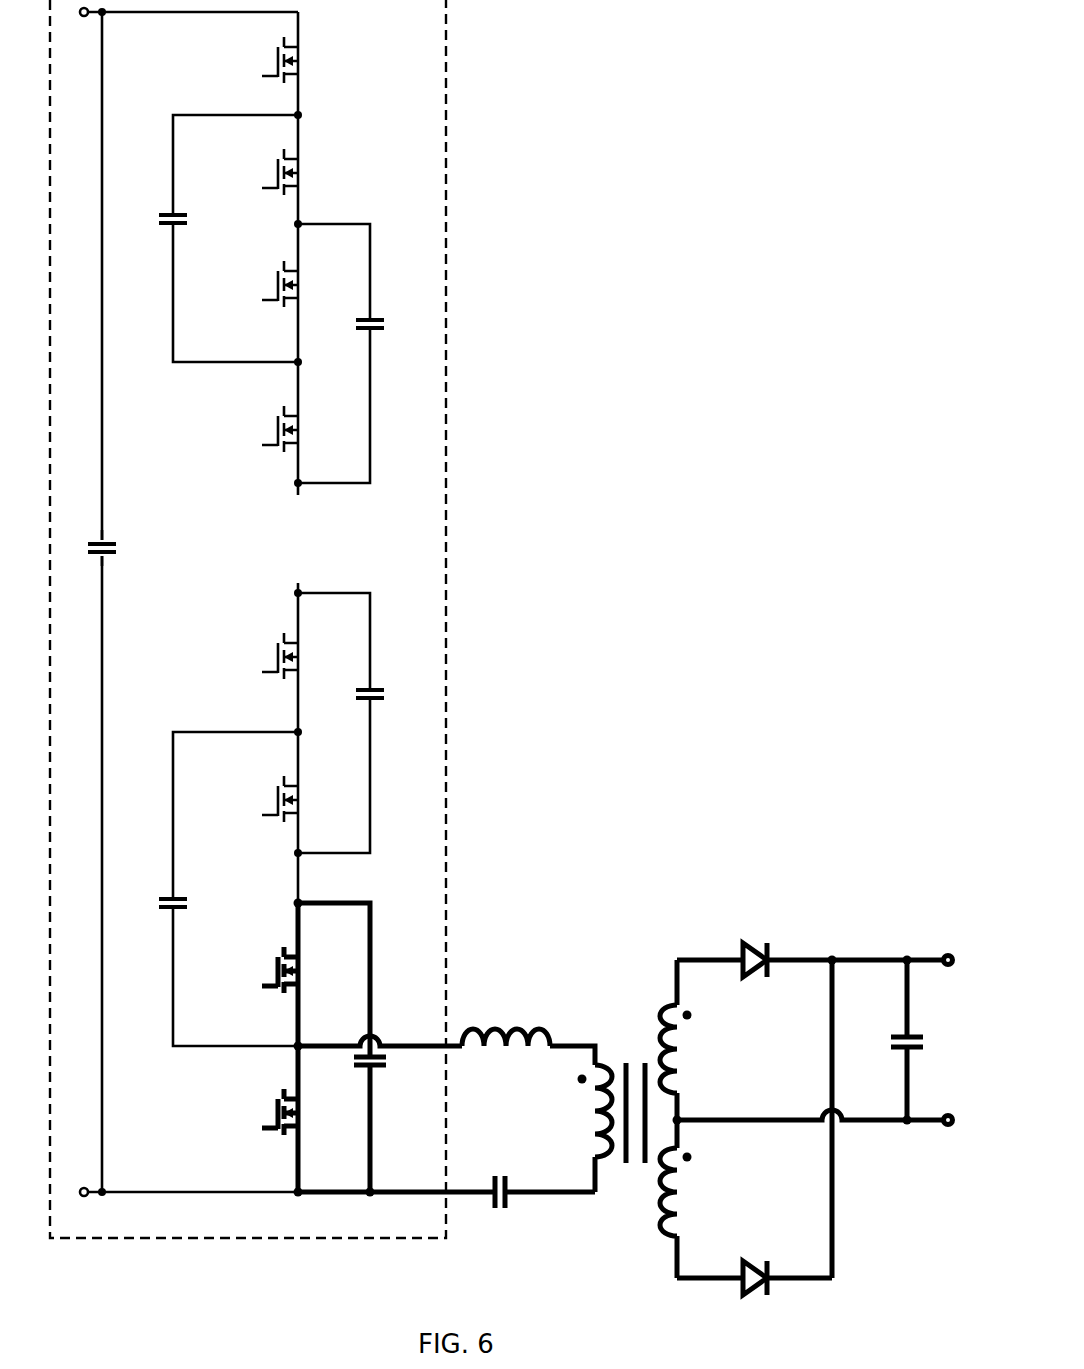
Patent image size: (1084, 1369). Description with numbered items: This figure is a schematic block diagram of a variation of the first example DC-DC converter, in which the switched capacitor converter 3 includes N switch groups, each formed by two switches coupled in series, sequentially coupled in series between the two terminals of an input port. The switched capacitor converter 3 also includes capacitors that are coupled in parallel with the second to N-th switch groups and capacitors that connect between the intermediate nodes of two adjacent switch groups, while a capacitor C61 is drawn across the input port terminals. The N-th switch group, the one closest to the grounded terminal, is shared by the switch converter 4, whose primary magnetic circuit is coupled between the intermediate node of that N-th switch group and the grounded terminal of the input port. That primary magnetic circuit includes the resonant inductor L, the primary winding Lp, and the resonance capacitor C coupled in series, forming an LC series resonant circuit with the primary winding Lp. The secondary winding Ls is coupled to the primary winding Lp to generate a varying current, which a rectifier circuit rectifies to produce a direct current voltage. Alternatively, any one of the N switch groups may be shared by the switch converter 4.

The switched capacitor converter 3 is at (449, 290).
The switch converter 4 is at (584, 997).
The input capacitor C61 is at (122, 557).
The resonant inductor L is at (506, 1055).
The primary winding Lp is at (585, 1111).
The secondary winding Ls is at (684, 1119).
The resonance capacitor C is at (499, 1203).